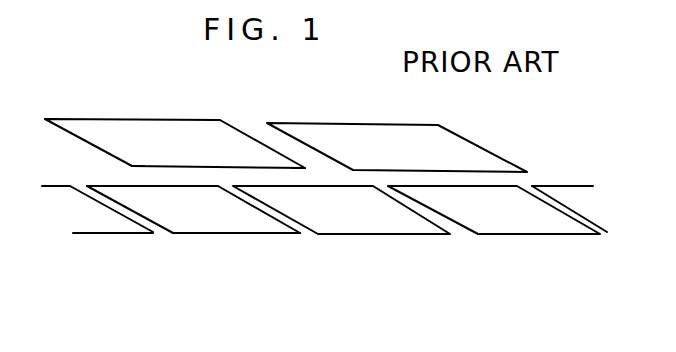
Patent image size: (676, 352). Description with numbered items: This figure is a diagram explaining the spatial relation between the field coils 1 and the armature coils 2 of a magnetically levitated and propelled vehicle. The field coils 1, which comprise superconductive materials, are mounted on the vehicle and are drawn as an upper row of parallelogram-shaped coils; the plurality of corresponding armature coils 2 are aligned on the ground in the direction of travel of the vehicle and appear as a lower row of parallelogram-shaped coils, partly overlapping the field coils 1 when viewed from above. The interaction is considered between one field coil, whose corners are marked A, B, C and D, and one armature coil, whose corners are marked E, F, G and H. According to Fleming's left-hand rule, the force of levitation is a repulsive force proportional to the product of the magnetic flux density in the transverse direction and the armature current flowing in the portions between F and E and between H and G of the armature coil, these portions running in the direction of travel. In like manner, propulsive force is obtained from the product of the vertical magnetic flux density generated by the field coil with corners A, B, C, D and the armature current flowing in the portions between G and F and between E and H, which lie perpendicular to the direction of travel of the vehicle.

The field coils 1 is at (300, 122).
The armature coils 2 is at (478, 237).
The corner point A of field coil A is at (130, 174).
The corner point B of field coil B is at (308, 171).
The corner point C of field coil C is at (219, 111).
The corner point D of field coil D is at (46, 109).
The corner point E of armature coil E is at (177, 245).
The corner point F of armature coil F is at (297, 245).
The corner point G of armature coil G is at (214, 179).
The corner point H of armature coil H is at (88, 175).